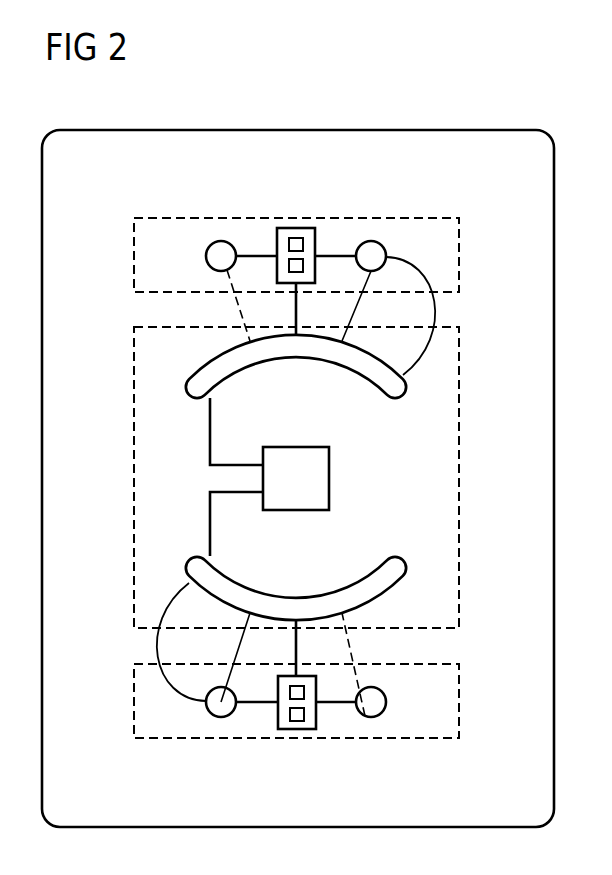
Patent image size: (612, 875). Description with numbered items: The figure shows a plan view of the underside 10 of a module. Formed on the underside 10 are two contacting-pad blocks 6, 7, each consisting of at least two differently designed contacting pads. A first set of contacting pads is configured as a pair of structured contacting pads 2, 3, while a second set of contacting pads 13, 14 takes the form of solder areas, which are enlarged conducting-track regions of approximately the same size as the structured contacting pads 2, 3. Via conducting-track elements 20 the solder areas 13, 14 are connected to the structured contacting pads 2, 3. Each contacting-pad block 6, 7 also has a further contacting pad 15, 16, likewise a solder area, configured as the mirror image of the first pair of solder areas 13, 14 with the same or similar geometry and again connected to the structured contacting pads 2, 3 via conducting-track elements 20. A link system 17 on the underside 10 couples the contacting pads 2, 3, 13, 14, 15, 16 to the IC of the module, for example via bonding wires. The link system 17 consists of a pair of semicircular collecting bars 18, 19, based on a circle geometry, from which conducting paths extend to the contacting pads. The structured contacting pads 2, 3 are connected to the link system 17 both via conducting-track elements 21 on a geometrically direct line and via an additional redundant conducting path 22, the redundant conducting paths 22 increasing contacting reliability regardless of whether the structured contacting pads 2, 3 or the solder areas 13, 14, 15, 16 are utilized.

The underside 10 is at (487, 150).
The structured contacting pad 2 is at (296, 228).
The structured contacting pad 3 is at (297, 730).
The contacting-pad block 6 is at (460, 252).
The contacting-pad block 7 is at (460, 702).
The solder area 13 is at (371, 250).
The solder area 14 is at (221, 712).
The further contacting pad 15 is at (221, 250).
The further contacting pad 16 is at (375, 712).
The link system 17 is at (460, 483).
The collecting bar 18 is at (299, 352).
The collecting bar 19 is at (292, 604).
The conducting-track element 20 is at (256, 256).
The conducting-track element 21 is at (296, 310).
The redundant conducting path 22 is at (438, 307).
The element IC is at (329, 478).